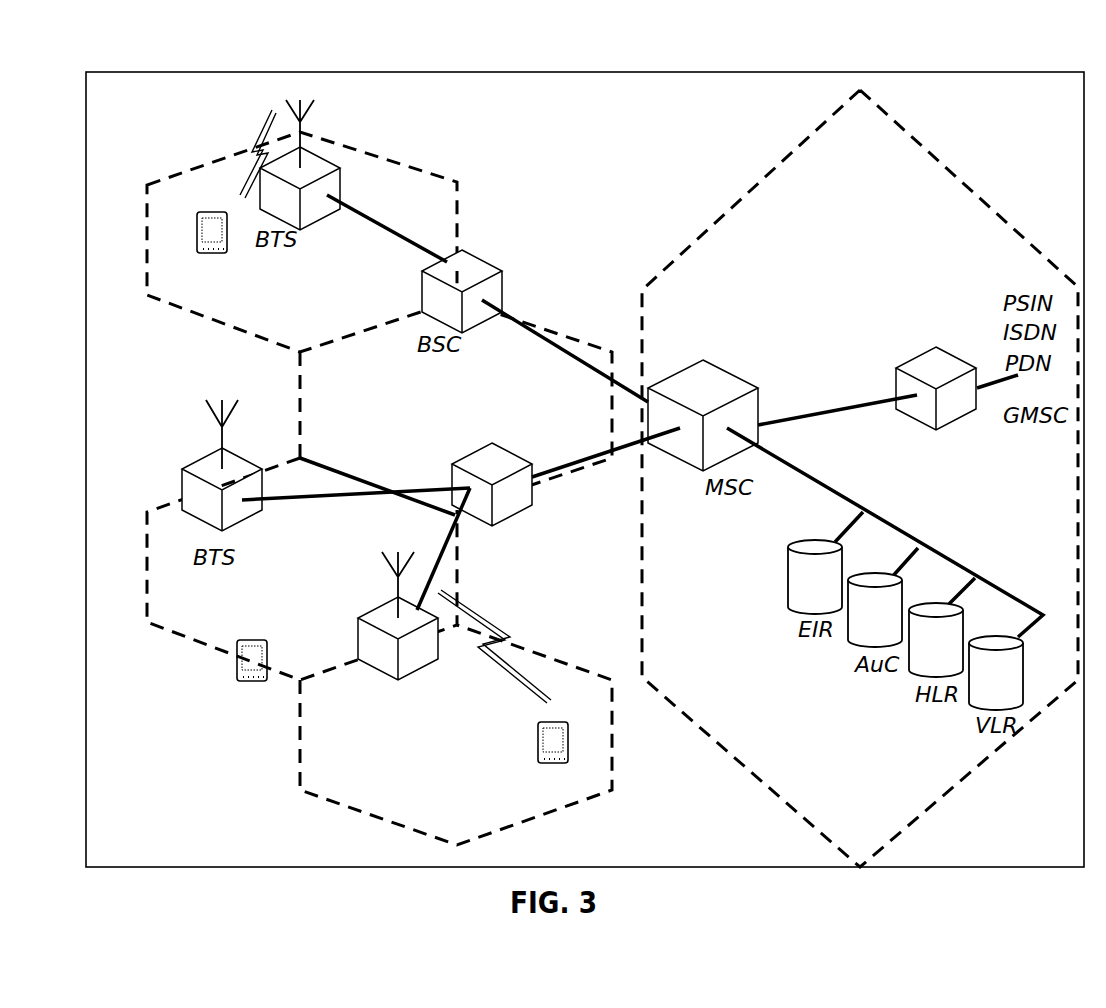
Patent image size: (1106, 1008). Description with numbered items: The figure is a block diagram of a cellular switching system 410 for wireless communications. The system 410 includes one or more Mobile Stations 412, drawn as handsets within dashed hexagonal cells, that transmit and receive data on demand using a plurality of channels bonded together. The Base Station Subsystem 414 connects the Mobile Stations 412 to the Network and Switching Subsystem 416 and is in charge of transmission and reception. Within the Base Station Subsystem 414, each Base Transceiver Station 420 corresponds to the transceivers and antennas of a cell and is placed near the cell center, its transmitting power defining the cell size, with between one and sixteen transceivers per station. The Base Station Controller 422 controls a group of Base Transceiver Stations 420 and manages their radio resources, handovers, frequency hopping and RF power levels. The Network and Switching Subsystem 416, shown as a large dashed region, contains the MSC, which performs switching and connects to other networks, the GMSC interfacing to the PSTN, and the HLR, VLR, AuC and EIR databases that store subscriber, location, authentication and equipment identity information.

The cellular switching system 410 is at (649, 63).
The Mobile Station (MS) 412 is at (227, 240).
The Base Station Subsystem (BSS) 414 is at (608, 703).
The Network and Switching Subsystem (NSS) 416 is at (913, 142).
The Base Transceiver Station (BTS) 420 is at (412, 677).
The Base Station Controller (BSC) 422 is at (497, 468).